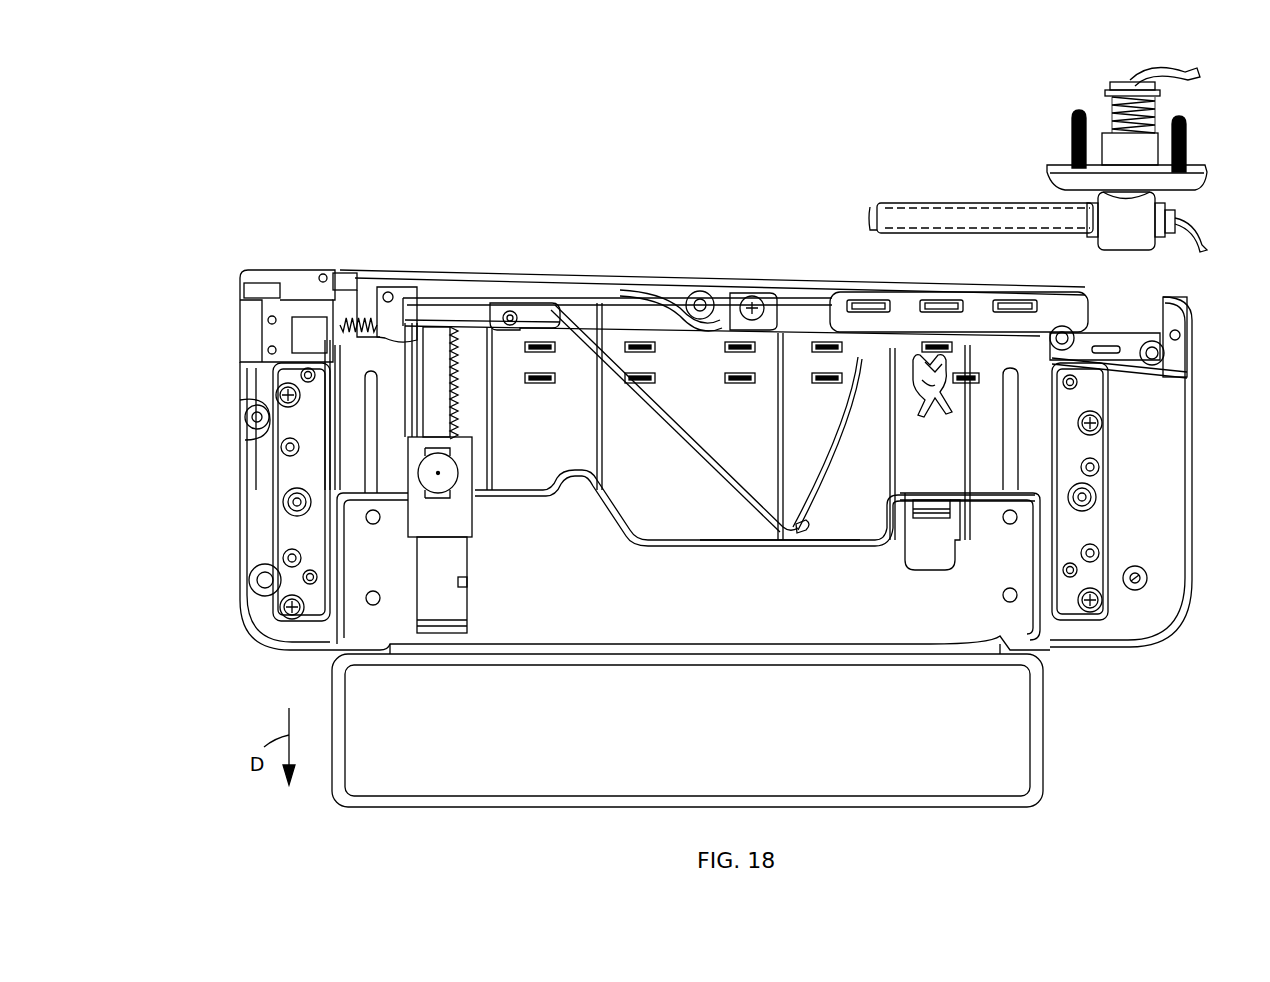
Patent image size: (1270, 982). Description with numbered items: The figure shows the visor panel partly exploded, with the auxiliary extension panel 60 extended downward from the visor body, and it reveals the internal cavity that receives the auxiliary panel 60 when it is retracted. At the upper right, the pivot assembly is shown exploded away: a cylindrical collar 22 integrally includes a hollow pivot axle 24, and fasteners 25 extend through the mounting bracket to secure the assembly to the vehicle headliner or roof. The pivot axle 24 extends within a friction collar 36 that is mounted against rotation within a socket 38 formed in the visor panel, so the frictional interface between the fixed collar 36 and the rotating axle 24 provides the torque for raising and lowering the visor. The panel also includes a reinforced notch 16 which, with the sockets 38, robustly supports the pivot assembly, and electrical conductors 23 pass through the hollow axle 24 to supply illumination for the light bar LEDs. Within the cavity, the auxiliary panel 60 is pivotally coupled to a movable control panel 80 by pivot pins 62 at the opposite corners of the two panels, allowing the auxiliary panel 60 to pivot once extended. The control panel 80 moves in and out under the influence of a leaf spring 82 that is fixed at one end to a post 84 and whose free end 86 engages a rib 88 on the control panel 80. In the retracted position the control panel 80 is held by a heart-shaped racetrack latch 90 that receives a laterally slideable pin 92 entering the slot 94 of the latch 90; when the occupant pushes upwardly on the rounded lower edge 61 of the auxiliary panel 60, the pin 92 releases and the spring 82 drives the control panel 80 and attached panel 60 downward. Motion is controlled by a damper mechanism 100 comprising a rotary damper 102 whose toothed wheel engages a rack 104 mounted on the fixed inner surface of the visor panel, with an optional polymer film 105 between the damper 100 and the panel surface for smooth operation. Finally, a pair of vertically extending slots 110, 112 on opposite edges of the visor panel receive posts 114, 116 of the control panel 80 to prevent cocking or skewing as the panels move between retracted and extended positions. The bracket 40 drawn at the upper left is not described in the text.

The reinforced notch 16 is at (1085, 320).
The cylindrical collar 22 is at (1130, 237).
The electrical conductor 23 is at (1202, 232).
The pivot axle 24 is at (877, 207).
The fasteners 25 is at (1070, 137).
The friction collar 36 is at (938, 200).
The socket 38 is at (905, 300).
The hinge bracket 40 is at (300, 268).
The auxiliary extension panel 60 is at (592, 808).
The lower extending edge 61 is at (830, 797).
The pivot pins 62 is at (370, 656).
The control panel 80 is at (690, 536).
The leaf spring 82 is at (702, 457).
The post 84 is at (512, 310).
The free end 86 is at (812, 524).
The rib 88 is at (758, 547).
The heart-shaped racetrack latch 90 is at (916, 382).
The laterally slideable pin 92 is at (915, 497).
The slot 94 is at (933, 412).
The damper mechanism 100 is at (480, 520).
The rotary damper 102 is at (458, 474).
The rack 104 is at (450, 412).
The polymer film 105 is at (440, 325).
The vertically extending slot 110 is at (363, 437).
The vertically extending slot 112 is at (972, 431).
The post 114 is at (380, 524).
The post 116 is at (1003, 524).